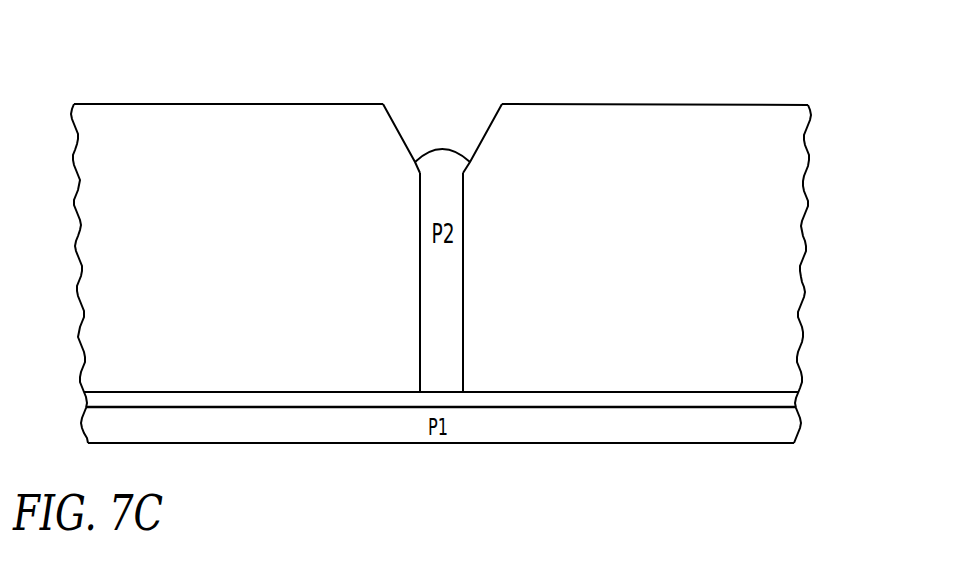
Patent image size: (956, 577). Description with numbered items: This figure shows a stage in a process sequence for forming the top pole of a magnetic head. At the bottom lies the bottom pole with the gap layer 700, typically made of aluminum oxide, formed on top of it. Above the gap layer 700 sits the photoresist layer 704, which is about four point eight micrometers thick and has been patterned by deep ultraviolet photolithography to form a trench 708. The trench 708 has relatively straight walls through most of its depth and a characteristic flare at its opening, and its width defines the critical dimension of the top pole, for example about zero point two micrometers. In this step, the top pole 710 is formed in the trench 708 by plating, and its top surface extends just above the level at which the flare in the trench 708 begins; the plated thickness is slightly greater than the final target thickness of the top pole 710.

The gap layer 700 is at (797, 397).
The photoresist layer 704 is at (736, 104).
The trench 708 is at (468, 95).
The top pole 710 is at (425, 291).